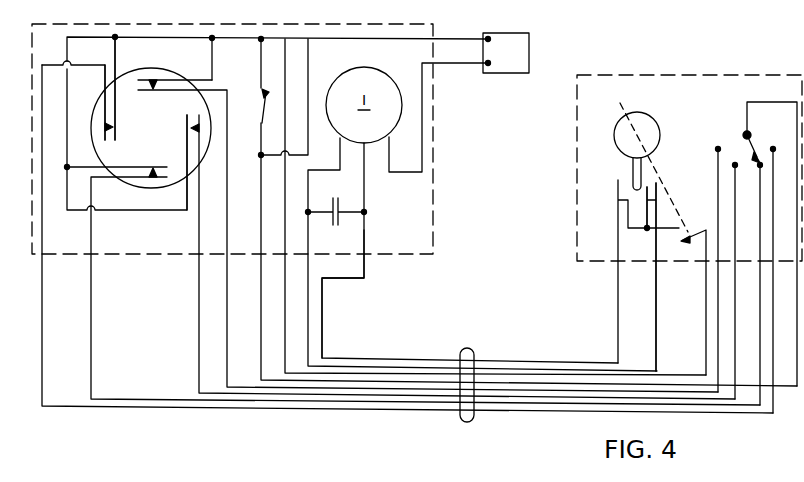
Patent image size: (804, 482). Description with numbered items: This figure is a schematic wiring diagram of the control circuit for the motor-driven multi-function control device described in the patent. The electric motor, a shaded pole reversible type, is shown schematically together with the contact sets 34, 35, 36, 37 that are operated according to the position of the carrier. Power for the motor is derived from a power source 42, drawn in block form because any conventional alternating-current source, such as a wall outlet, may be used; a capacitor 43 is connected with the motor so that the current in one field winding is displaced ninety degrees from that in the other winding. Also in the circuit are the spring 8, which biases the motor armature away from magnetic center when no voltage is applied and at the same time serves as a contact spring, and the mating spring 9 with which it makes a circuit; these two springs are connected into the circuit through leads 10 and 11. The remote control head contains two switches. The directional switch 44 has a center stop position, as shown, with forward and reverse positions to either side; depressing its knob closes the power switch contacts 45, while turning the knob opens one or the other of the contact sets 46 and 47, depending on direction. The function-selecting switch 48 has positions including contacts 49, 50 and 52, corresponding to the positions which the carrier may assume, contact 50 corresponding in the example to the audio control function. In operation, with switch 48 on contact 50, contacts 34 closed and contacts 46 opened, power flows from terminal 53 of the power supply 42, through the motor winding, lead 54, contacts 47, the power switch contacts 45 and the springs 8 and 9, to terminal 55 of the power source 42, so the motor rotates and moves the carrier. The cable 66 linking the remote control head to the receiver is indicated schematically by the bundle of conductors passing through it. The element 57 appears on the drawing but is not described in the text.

The spring 8 is at (519, 212).
The mating spring 9 is at (271, 106).
The lead 10 is at (262, 80).
The lead 11 is at (262, 136).
The contact set 34 is at (152, 92).
The contact set 35 is at (211, 152).
The contact set 36 is at (133, 166).
The contact set 37 is at (113, 106).
The power source 42 is at (512, 65).
The capacitor 43 is at (337, 198).
The directional switch 44 is at (645, 113).
The power switch contacts 45 is at (690, 232).
The contacts 46 is at (650, 212).
The contacts 47 is at (623, 198).
The function-selecting switch 48 is at (745, 126).
The position 49 is at (775, 149).
The contact 50 is at (758, 170).
The position 52 is at (715, 149).
The terminal 53 is at (483, 72).
The lead 54 is at (366, 245).
The terminal 55 is at (484, 36).
The lead 57 is at (734, 168).
The cable 66 is at (471, 421).